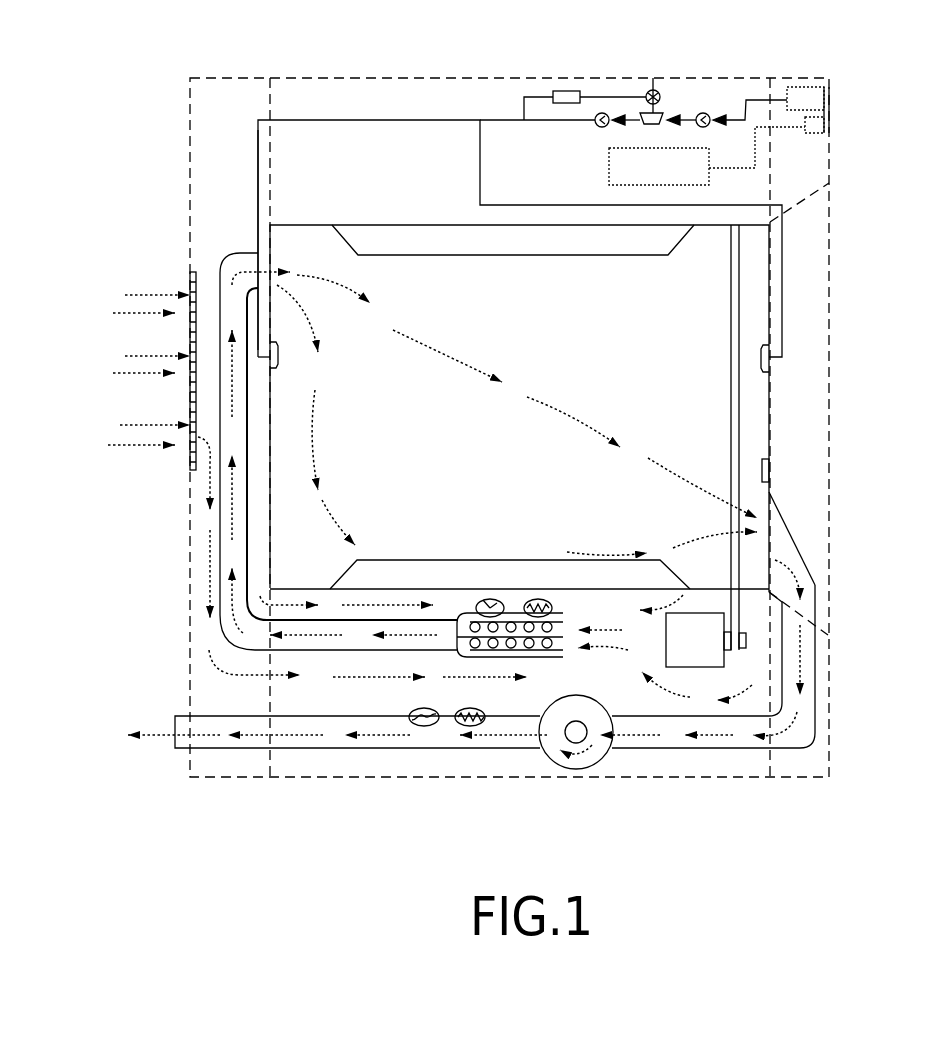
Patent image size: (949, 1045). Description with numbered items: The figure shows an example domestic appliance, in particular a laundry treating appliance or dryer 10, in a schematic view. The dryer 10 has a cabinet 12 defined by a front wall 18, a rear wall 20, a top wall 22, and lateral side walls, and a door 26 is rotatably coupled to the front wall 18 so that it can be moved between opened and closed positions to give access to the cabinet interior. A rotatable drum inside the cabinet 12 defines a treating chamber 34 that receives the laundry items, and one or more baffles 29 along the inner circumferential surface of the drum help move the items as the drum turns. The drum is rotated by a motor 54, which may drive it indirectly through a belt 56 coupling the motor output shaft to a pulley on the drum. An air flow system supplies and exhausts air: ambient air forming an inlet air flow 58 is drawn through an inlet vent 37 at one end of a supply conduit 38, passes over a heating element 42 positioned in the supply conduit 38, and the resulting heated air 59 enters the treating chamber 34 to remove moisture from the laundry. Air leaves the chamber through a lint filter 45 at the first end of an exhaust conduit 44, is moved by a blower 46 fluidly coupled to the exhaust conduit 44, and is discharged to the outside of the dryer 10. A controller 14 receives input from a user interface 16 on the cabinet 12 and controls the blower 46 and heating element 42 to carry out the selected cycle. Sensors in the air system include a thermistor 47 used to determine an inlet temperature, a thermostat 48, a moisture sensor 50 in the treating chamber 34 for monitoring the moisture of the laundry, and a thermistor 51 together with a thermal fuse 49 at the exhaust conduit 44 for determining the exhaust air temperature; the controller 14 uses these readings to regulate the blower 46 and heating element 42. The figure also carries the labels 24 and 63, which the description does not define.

The dryer 10 is at (822, 45).
The cabinet 12 is at (345, 76).
The controller 14 is at (609, 158).
The user interface 16 is at (829, 125).
The front wall 18 is at (829, 668).
The rear wall 20 is at (190, 78).
The top wall 22 is at (210, 690).
The heating assembly 24 is at (405, 76).
The door 26 is at (829, 345).
The baffles 29 is at (363, 240).
The treating chamber 34 is at (482, 297).
The inlet vent 37 is at (190, 282).
The supply conduit 38 is at (535, 657).
The heating element 42 is at (500, 655).
The exhaust conduit 44 is at (305, 748).
The lint filter 45 is at (769, 518).
The blower 46 is at (597, 768).
The thermistor 47 is at (540, 599).
The thermostat 48 is at (490, 599).
The thermal fuse 49 is at (425, 726).
The moisture sensor 50 is at (769, 470).
The thermistor 51 is at (470, 726).
The motor 54 is at (705, 658).
The belt 56 is at (740, 650).
The inlet air flow 58 is at (165, 355).
The heated air 59 is at (815, 738).
The outer wall 63 is at (258, 140).